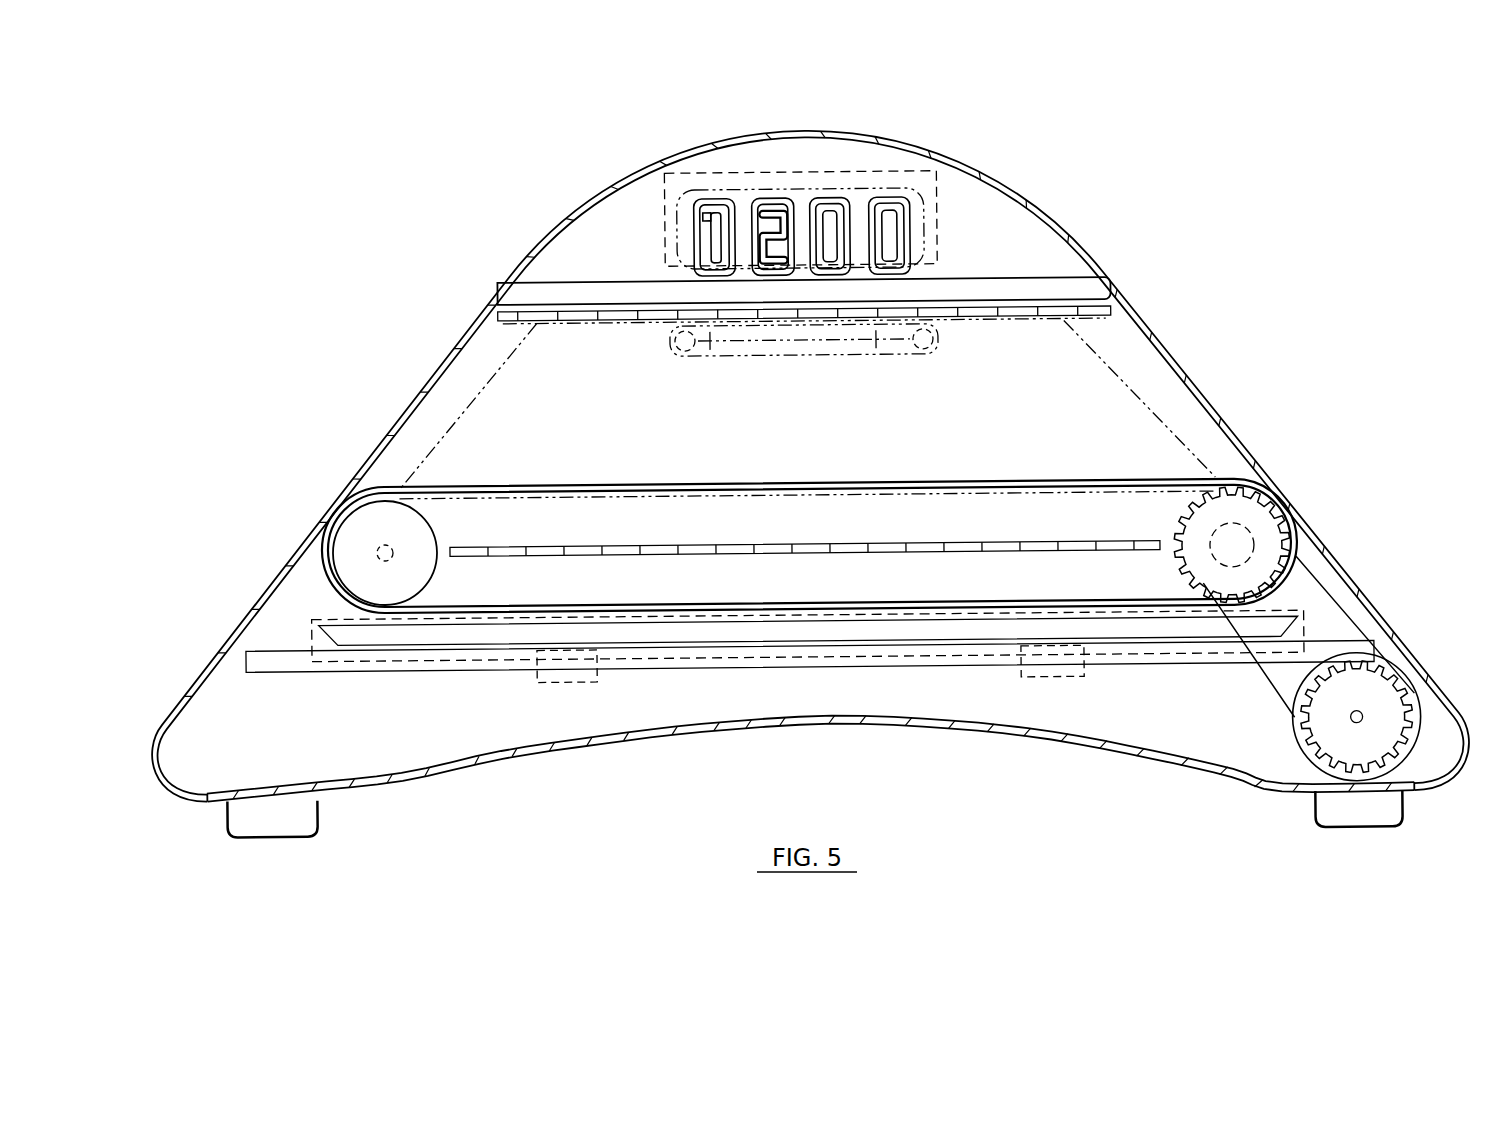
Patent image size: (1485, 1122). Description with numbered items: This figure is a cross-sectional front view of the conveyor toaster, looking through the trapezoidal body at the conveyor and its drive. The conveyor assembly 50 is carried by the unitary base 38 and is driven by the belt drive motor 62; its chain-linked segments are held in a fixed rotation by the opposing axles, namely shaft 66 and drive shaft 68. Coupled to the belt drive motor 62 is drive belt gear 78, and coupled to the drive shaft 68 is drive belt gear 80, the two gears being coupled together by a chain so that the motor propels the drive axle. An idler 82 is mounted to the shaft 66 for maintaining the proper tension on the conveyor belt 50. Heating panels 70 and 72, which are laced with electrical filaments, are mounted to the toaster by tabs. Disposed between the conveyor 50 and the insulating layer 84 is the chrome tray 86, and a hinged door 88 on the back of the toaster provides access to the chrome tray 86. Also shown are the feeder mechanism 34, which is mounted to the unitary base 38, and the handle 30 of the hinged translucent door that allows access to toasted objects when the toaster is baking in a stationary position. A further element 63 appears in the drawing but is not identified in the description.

The handle 30 is at (792, 361).
The feeder mechanism 34 is at (932, 178).
The unitary base 38 is at (918, 250).
The conveyor assembly 50 is at (1240, 492).
The belt drive motor 62 is at (1410, 699).
The shelf 63 is at (1070, 296).
The shaft 66 is at (385, 555).
The drive shaft 68 is at (1245, 553).
The heating panel 70 is at (947, 558).
The heating panel 72 is at (1115, 317).
The drive belt gear 78 is at (1408, 762).
The drive belt gear 80 is at (1270, 543).
The idler 82 is at (360, 540).
The insulating layer 84 is at (285, 662).
The chrome tray 86 is at (1300, 631).
The hinged door 88 is at (1160, 675).